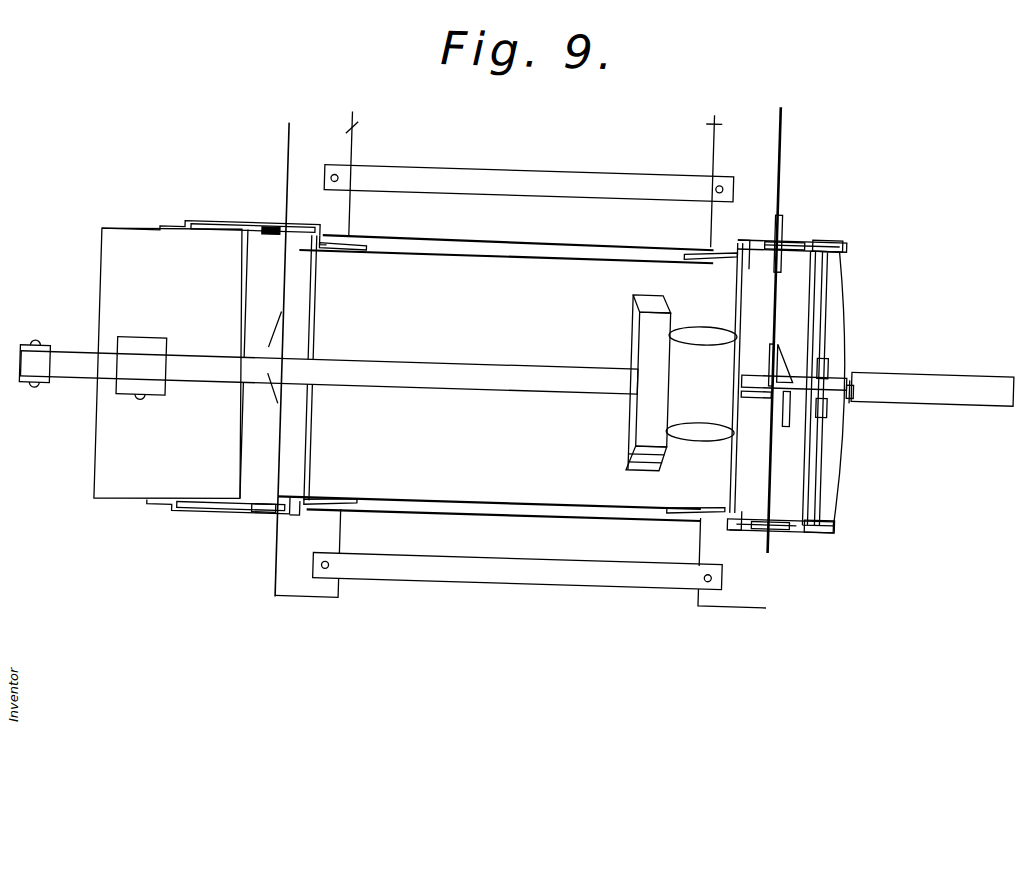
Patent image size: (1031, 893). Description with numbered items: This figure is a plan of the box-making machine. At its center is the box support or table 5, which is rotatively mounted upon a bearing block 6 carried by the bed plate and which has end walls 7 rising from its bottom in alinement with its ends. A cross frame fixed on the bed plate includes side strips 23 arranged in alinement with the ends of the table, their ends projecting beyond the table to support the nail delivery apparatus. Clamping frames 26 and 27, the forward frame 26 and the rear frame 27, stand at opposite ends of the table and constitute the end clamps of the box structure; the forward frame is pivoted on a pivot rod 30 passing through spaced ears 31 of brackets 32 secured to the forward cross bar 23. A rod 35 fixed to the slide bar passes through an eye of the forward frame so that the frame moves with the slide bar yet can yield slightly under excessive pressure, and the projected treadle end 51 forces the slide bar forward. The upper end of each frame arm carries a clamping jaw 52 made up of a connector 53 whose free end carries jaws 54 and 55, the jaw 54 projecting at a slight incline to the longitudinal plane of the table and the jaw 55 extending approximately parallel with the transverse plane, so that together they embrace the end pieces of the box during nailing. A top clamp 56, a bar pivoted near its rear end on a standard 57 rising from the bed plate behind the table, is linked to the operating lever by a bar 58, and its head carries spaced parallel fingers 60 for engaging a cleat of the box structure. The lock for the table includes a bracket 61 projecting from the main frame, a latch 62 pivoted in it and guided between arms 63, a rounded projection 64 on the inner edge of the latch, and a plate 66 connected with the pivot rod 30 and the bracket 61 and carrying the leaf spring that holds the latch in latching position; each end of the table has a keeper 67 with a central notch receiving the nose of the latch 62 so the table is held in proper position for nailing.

The box support or table 5 is at (489, 522).
The bearing block 6 is at (506, 233).
The end walls 7 is at (296, 348).
The side strips 23 is at (528, 351).
The clamping frame 26 is at (268, 521).
The clamping frame 27 is at (546, 173).
The pivot rod 30 is at (824, 451).
The spaced ears 31 is at (839, 237).
The brackets 32 is at (779, 212).
The rod 35 is at (855, 375).
The projected treadle end 51 is at (984, 363).
The clamping jaw 52 is at (276, 233).
The connector 53 is at (528, 378).
The jaw 54 is at (314, 286).
The jaw 55 is at (356, 249).
The top clamp 56 is at (488, 364).
The standard 57 is at (160, 355).
The bar 58 is at (28, 360).
The fingers 60 is at (684, 417).
The bracket 61 is at (777, 384).
The latch 62 is at (794, 366).
The arms 63 is at (800, 400).
The rounded projection 64 is at (768, 352).
The plate 66 is at (826, 389).
The keeper 67 is at (767, 384).